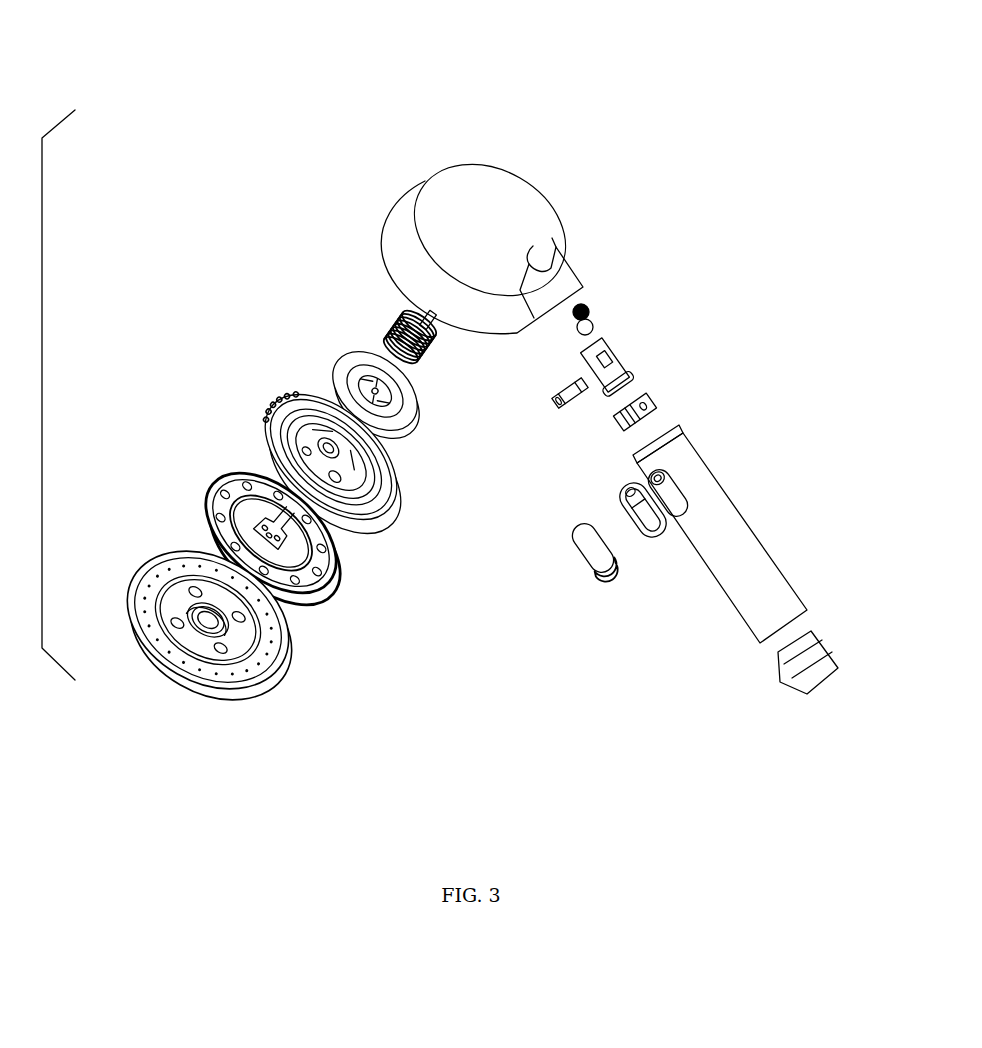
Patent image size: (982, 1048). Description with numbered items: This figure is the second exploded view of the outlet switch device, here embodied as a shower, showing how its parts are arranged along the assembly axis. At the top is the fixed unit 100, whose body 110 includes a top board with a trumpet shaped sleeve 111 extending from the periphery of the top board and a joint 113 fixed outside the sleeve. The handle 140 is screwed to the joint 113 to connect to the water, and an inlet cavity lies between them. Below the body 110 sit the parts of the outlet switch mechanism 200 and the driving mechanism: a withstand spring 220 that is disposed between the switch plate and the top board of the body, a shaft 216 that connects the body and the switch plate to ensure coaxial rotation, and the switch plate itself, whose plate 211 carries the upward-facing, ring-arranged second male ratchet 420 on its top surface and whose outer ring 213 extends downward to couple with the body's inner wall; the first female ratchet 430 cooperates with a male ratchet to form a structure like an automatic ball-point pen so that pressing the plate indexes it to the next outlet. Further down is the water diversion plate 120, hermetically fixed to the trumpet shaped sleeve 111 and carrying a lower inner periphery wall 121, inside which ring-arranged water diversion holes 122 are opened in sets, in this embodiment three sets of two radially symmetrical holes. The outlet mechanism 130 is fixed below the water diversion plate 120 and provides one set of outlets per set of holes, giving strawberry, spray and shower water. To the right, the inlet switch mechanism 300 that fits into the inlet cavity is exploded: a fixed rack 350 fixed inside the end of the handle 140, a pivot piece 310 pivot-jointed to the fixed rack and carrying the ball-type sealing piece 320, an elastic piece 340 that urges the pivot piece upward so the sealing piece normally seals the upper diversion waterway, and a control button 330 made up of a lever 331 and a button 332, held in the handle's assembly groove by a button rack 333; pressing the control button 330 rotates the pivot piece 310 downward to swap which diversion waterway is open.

The fixed unit 100 is at (432, 140).
The body 110 is at (517, 158).
The trumpet shaped sleeve 111 is at (408, 203).
The joint 113 is at (560, 256).
The water diversion plate 120 is at (214, 396).
The lower inner periphery wall 121 is at (395, 471).
The water diversion holes 122 is at (322, 422).
The outlet mechanism 130 is at (166, 520).
The handle 140 is at (756, 540).
The outlet switch mechanism 200 is at (272, 332).
The plate 211 is at (418, 400).
The outer ring 213 is at (418, 428).
The shaft 216 is at (432, 322).
The withstand spring 220 is at (387, 328).
The inlet switch mechanism 300 is at (594, 314).
The pivot piece 310 is at (622, 358).
The sealing piece 320 is at (660, 335).
The control button 330 is at (523, 530).
The pin 331 is at (563, 400).
The button 332 is at (600, 563).
The button rack 333 is at (650, 540).
The elastic piece 340 is at (594, 307).
The fixed rack 350 is at (652, 402).
The second male ratchet 420 is at (290, 406).
The first female ratchet 430 is at (352, 378).